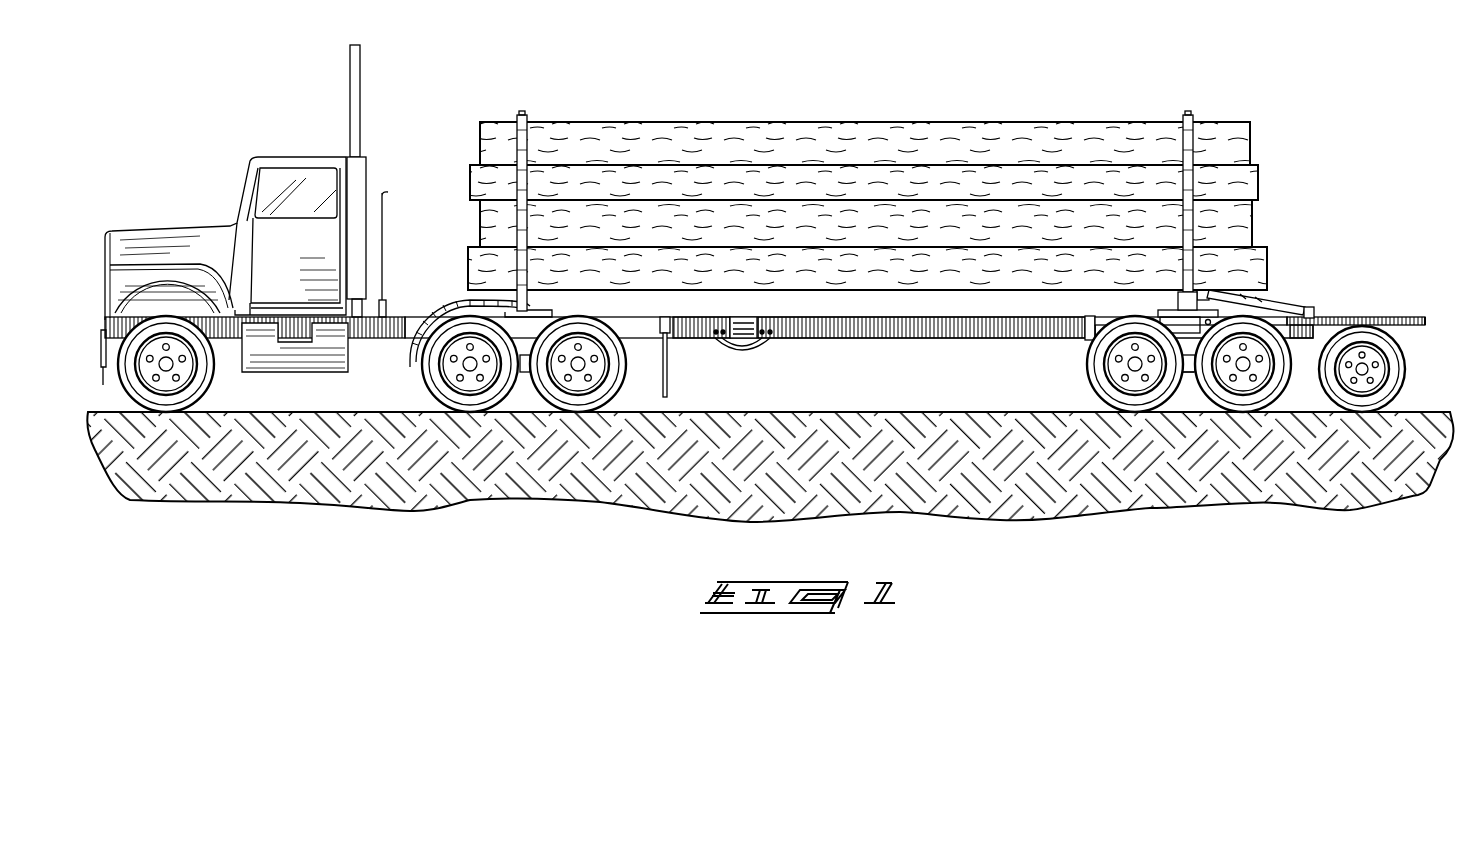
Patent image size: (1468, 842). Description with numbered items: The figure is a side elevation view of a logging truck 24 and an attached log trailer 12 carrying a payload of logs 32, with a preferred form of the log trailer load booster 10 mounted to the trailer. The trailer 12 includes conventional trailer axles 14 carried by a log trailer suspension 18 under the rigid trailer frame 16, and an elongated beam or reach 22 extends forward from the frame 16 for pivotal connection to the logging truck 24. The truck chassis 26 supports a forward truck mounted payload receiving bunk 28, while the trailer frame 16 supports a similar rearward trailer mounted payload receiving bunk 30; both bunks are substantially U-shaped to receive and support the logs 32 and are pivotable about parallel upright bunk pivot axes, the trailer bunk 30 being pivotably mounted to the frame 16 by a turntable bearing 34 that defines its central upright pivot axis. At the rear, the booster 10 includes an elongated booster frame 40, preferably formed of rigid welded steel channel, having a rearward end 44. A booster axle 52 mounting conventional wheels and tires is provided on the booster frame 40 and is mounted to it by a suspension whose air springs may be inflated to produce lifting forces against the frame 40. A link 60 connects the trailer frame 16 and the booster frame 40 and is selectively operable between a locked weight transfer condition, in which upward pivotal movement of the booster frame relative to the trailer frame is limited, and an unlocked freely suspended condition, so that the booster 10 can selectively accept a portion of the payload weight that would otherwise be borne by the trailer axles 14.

The log trailer load booster 10 is at (1343, 297).
The log trailer 12 is at (1022, 356).
The trailer axles 14 is at (1130, 366).
The trailer frame 16 is at (1100, 340).
The log trailer suspension 18 is at (1188, 372).
The reach 22 is at (790, 330).
The logging truck 24 is at (403, 163).
The truck chassis 26 is at (400, 325).
The truck mounted payload receiving bunk 28 is at (521, 116).
The trailer mounted payload receiving bunk 30 is at (1196, 118).
The logs 32 is at (862, 140).
The turntable bearing 34 is at (1158, 311).
The booster frame 40 is at (1370, 315).
The rearward end 44 is at (1425, 318).
The booster axle 52 is at (1368, 368).
The link 60 is at (1287, 294).